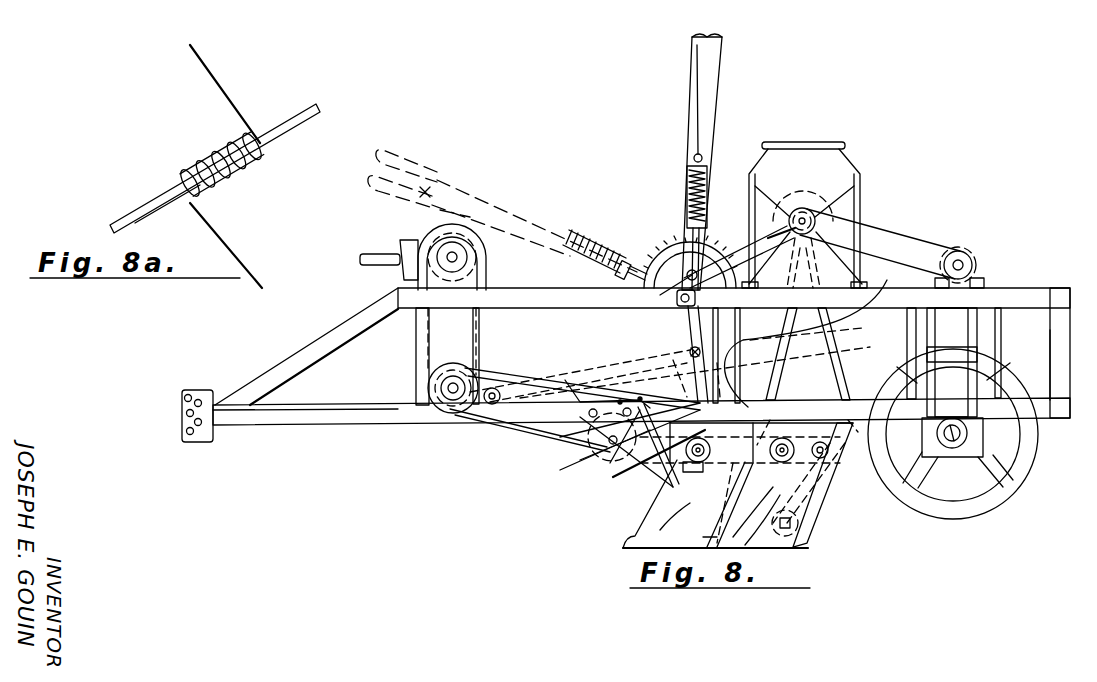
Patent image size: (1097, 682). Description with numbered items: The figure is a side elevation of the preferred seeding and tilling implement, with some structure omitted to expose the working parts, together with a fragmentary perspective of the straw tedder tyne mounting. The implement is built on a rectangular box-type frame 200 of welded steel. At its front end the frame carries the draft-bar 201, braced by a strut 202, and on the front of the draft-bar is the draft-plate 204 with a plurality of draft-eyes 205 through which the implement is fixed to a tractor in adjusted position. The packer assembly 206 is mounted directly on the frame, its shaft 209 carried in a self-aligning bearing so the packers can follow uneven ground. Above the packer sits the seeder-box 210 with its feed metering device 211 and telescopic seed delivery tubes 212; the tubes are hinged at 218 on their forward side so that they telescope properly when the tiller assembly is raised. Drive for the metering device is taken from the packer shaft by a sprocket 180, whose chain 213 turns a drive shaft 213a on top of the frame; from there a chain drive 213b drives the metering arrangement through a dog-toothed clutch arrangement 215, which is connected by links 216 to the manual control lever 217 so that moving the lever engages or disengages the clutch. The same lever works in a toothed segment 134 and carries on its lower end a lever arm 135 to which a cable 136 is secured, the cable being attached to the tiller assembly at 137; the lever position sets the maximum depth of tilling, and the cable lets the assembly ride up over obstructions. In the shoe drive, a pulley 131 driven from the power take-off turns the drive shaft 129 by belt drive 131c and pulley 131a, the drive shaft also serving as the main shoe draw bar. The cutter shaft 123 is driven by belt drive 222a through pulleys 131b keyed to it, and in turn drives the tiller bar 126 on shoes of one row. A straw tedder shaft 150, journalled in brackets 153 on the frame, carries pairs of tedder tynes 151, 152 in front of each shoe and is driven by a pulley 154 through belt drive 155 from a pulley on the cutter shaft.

In FIG. 8, the cutter shaft 123 is at (596, 462).
In FIG. 8, the tiller bar 126 is at (800, 530).
In FIG. 8, the drive shaft 129 is at (456, 402).
In FIG. 8, the pulley 131 is at (478, 281).
In FIG. 8, the pulley 131a is at (478, 257).
In FIG. 8, the pulleys 131b is at (440, 402).
In FIG. 8, the belt drive 131c is at (478, 333).
In FIG. 8, the toothed segment 134 is at (662, 246).
In FIG. 8, the lever arm 135 is at (676, 324).
In FIG. 8, the cable 136 is at (706, 322).
In FIG. 8, the cable attachment point 137 is at (685, 350).
In FIG. 8a, the straw tedder shaft 150 is at (305, 118).
In FIG. 8, the straw tedder shaft 150 is at (620, 475).
In FIG. 8a, the tedder tyne 151 is at (222, 231).
In FIG. 8, the tedder tyne 151 is at (650, 502).
In FIG. 8a, the tedder tyne 152 is at (225, 83).
In FIG. 8, the tedder tyne 152 is at (590, 463).
In FIG. 8, the brackets 153 is at (587, 398).
In FIG. 8, the pulley 154 is at (680, 466).
In FIG. 8, the belt drive 155 is at (650, 398).
In FIG. 8, the sprocket 180 is at (990, 360).
In FIG. 8, the rectangular box-type frame 200 is at (1015, 284).
In FIG. 8, the draft-bar 201 is at (308, 422).
In FIG. 8, the strut 202 is at (295, 361).
In FIG. 8, the draft-plate 204 is at (204, 390).
In FIG. 8, the draft-eyes 205 is at (182, 420).
In FIG. 8, the packer assembly 206 is at (1036, 452).
In FIG. 8, the shaft 209 is at (958, 395).
In FIG. 8, the seeder-box 210 is at (860, 163).
In FIG. 8, the feed metering device 211 is at (821, 213).
In FIG. 8, the telescopic seed delivery tubes 212 is at (878, 284).
In FIG. 8, the chain 213 is at (973, 324).
In FIG. 8, the drive shaft 213a is at (962, 262).
In FIG. 8, the chain drive 213b is at (912, 235).
In FIG. 8, the dog-toothed clutch arrangement 215 is at (802, 208).
In FIG. 8, the links 216 is at (720, 240).
In FIG. 8, the manual control lever 217 is at (666, 111).
In FIG. 8, the hinge 218 is at (830, 472).
In FIG. 8, the belt drive 222a is at (520, 420).